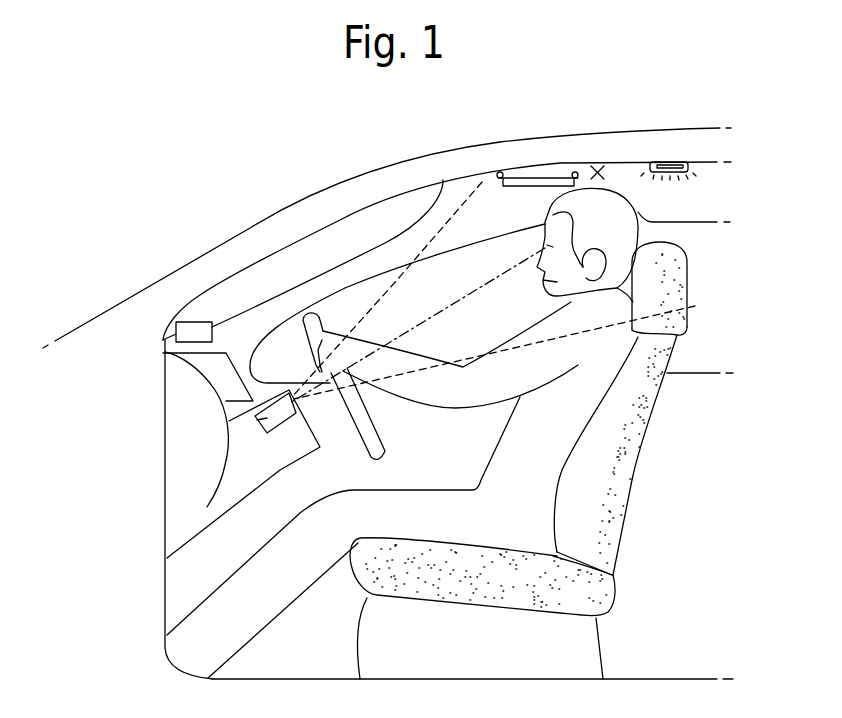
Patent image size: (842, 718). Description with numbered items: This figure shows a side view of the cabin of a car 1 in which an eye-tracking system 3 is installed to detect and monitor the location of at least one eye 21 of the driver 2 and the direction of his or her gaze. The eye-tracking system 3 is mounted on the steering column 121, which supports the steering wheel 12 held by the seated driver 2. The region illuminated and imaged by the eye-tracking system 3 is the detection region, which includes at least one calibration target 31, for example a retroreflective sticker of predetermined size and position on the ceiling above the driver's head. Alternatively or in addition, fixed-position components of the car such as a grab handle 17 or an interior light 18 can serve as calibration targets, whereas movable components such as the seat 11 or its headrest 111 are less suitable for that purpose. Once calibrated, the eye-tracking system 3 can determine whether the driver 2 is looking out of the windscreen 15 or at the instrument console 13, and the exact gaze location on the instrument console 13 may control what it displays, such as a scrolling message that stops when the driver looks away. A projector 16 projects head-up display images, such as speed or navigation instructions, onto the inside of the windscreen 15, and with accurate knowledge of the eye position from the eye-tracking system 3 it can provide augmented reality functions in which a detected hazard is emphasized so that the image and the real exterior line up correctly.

The car 1 is at (316, 170).
The driver 2 is at (540, 440).
The eye-tracking system 3 is at (243, 434).
The seat 11 is at (593, 514).
The steering wheel 12 is at (373, 432).
The instrument console 13 is at (223, 375).
The windscreen 15 is at (268, 265).
The projector 16 is at (193, 328).
The grab handle 17 is at (537, 172).
The interior light 18 is at (667, 162).
The eye 21 is at (543, 226).
The calibration target 31 is at (597, 165).
The headrest 111 is at (662, 281).
The steering column 121 is at (243, 468).